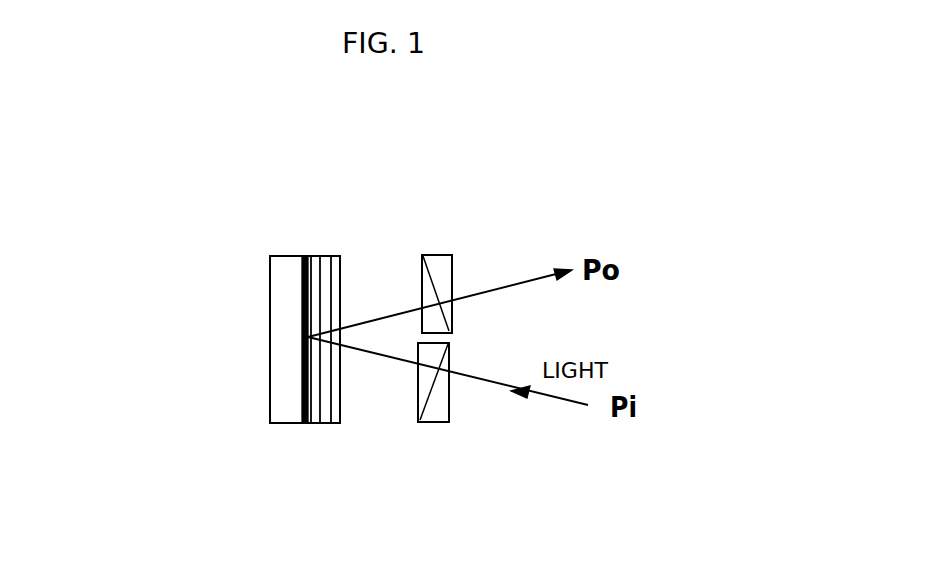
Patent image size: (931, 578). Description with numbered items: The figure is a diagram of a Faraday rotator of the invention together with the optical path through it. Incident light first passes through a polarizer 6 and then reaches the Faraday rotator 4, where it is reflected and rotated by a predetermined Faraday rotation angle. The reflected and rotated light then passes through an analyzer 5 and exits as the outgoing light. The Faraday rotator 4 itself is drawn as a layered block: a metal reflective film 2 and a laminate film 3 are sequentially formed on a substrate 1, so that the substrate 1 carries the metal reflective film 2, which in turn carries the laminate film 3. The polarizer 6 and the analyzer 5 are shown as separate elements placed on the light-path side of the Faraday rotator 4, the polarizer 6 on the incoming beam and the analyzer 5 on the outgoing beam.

The substrate 1 is at (201, 339).
The metal reflective film 2 is at (173, 293).
The laminate film 3 is at (342, 244).
The Faraday rotator 4 is at (348, 433).
The analyzer 5 is at (433, 255).
The polarizer 6 is at (449, 412).